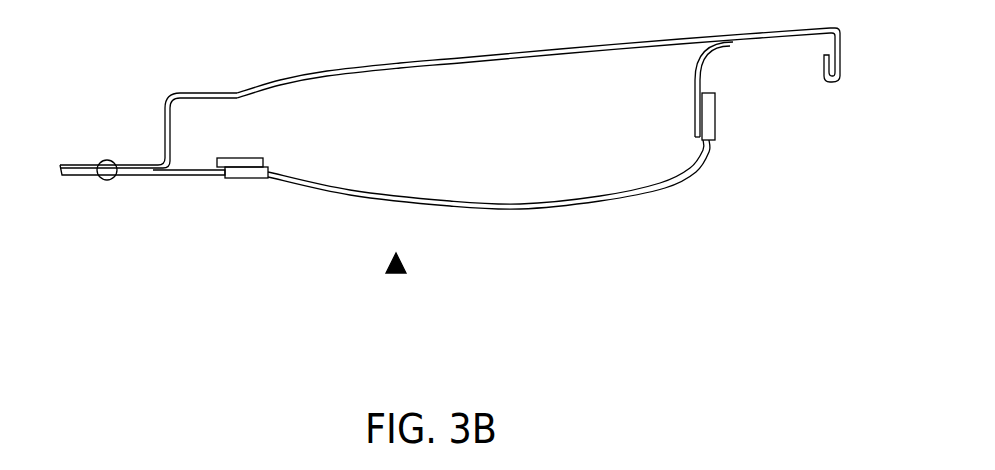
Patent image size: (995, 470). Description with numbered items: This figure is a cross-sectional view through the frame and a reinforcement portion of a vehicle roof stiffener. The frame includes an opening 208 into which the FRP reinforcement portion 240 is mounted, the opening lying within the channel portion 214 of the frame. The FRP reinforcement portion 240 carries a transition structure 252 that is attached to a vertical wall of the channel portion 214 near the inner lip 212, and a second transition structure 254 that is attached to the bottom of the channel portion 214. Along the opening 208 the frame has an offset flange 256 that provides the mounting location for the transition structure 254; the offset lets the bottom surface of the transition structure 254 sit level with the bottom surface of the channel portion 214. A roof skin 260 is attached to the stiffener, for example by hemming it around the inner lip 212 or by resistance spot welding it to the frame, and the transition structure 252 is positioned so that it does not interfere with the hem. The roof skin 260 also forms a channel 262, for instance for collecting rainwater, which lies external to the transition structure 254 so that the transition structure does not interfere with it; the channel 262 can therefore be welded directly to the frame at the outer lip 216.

The opening 208 is at (396, 273).
The inner lip 212 is at (767, 43).
The channel portion 214 is at (368, 203).
The outer lip 216 is at (202, 176).
The FRP reinforcement portion 240 is at (613, 202).
The transition structure 252 is at (715, 113).
The transition structure 254 is at (253, 178).
The offset flange 256 is at (252, 158).
The roof skin 260 is at (557, 50).
The channel 262 is at (165, 130).